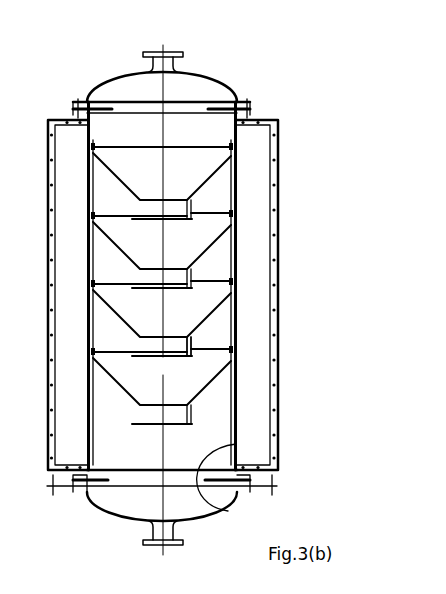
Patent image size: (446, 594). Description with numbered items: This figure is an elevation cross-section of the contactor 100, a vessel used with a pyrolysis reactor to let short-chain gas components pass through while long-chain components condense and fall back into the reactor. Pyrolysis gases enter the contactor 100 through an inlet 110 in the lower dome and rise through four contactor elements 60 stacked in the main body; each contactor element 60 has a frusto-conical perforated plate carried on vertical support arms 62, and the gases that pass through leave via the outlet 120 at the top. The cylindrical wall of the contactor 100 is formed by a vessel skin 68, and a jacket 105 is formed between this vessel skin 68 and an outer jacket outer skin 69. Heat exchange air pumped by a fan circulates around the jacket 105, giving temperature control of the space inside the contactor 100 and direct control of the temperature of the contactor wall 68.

The contactor 100 is at (195, 293).
The outlet 120 is at (205, 75).
The contactor element 60 is at (222, 186).
The vertical support arm 62 is at (231, 302).
The jacket 105 is at (318, 407).
The jacket outer skin 69 is at (282, 458).
The vessel skin 68 is at (207, 493).
The inlet 110 is at (150, 548).